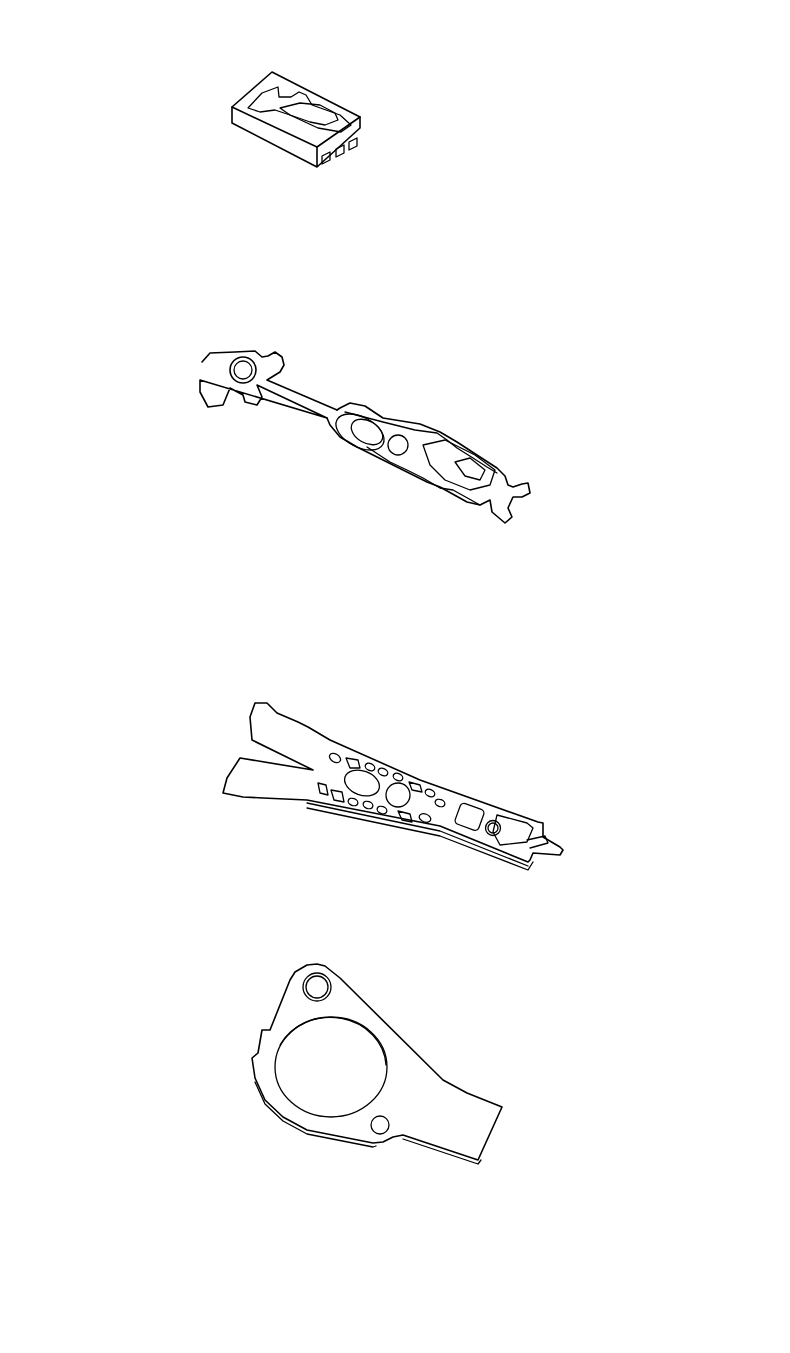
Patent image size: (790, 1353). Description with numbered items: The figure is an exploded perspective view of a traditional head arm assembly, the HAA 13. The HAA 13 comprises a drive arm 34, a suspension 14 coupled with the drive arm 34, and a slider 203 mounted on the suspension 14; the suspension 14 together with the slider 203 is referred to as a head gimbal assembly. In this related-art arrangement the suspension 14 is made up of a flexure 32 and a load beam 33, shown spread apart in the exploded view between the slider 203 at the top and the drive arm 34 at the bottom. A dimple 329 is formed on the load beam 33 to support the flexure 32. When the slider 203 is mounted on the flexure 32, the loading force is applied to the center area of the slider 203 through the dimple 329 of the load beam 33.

The HAA 13 is at (193, 95).
The suspension 14 is at (540, 454).
The slider 203 is at (312, 108).
The flexure 32 is at (425, 433).
The load beam 33 is at (468, 798).
The dimple 329 is at (495, 828).
The drive arm 34 is at (417, 1077).